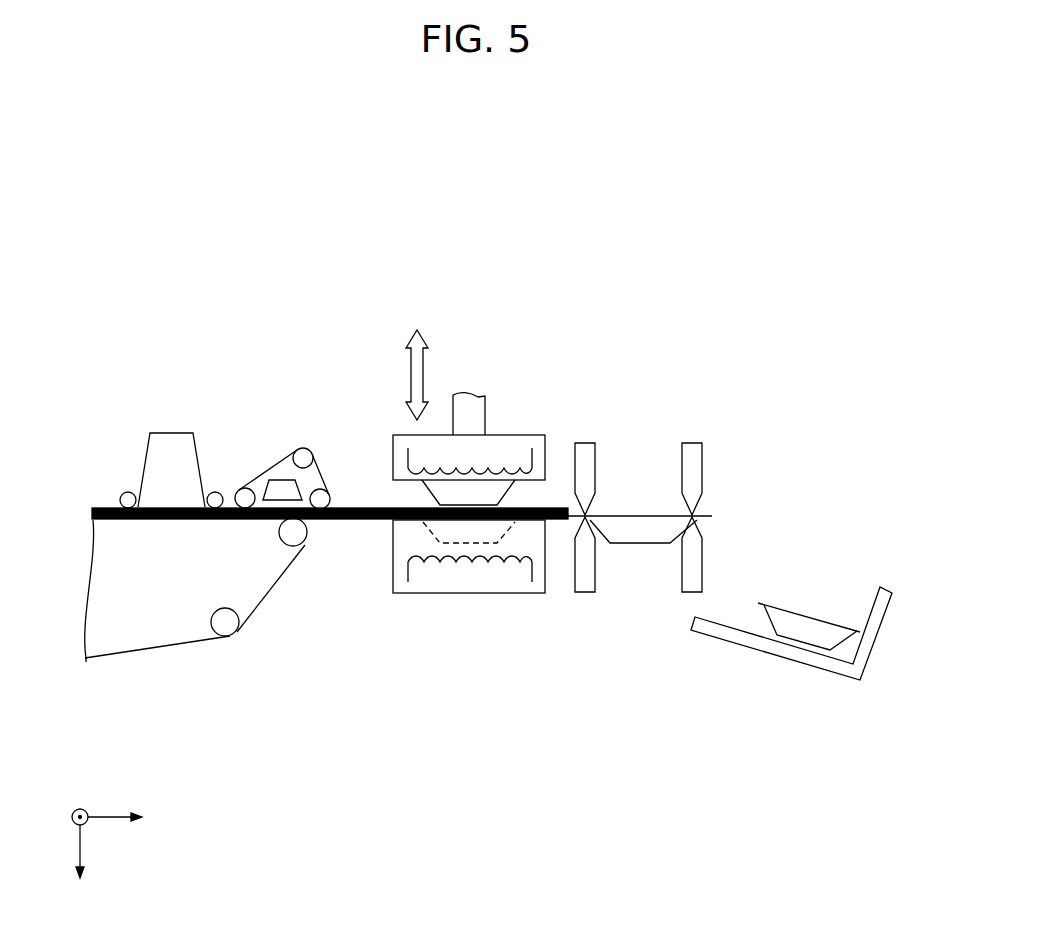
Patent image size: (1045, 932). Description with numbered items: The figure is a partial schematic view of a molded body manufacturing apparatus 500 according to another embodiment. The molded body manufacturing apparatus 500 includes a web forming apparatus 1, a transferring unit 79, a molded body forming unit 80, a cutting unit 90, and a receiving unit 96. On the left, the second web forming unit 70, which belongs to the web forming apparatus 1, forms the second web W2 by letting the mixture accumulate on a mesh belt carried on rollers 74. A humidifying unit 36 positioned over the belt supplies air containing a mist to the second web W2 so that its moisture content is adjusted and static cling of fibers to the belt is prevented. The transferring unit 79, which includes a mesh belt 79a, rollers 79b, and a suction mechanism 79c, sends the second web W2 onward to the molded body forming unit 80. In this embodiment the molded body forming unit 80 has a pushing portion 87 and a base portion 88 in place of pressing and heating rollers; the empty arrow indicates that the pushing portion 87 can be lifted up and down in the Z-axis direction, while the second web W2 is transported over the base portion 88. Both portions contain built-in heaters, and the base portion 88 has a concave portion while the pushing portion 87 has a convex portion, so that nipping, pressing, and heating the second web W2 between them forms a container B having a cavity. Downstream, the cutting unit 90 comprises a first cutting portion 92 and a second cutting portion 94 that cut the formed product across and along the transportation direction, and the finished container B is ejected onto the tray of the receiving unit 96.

The molded body manufacturing apparatus 500 is at (425, 222).
The web forming apparatus 1 is at (380, 298).
The humidifying unit 36 is at (173, 442).
The second web forming unit 70 is at (155, 667).
The rollers 74 is at (303, 532).
The transferring unit 79 is at (200, 352).
The mesh belt 79a is at (252, 478).
The rollers 79b is at (307, 453).
The suction mechanism 79c is at (283, 486).
The second web W2 is at (367, 507).
The molded body forming unit 80 is at (534, 362).
The pushing portion 87 is at (528, 433).
The base portion 88 is at (475, 596).
The cutting unit 90 is at (565, 375).
The first cutting portion 92 is at (590, 442).
The second cutting portion 94 is at (695, 442).
The container B is at (642, 546).
The receiving unit 96 is at (782, 658).